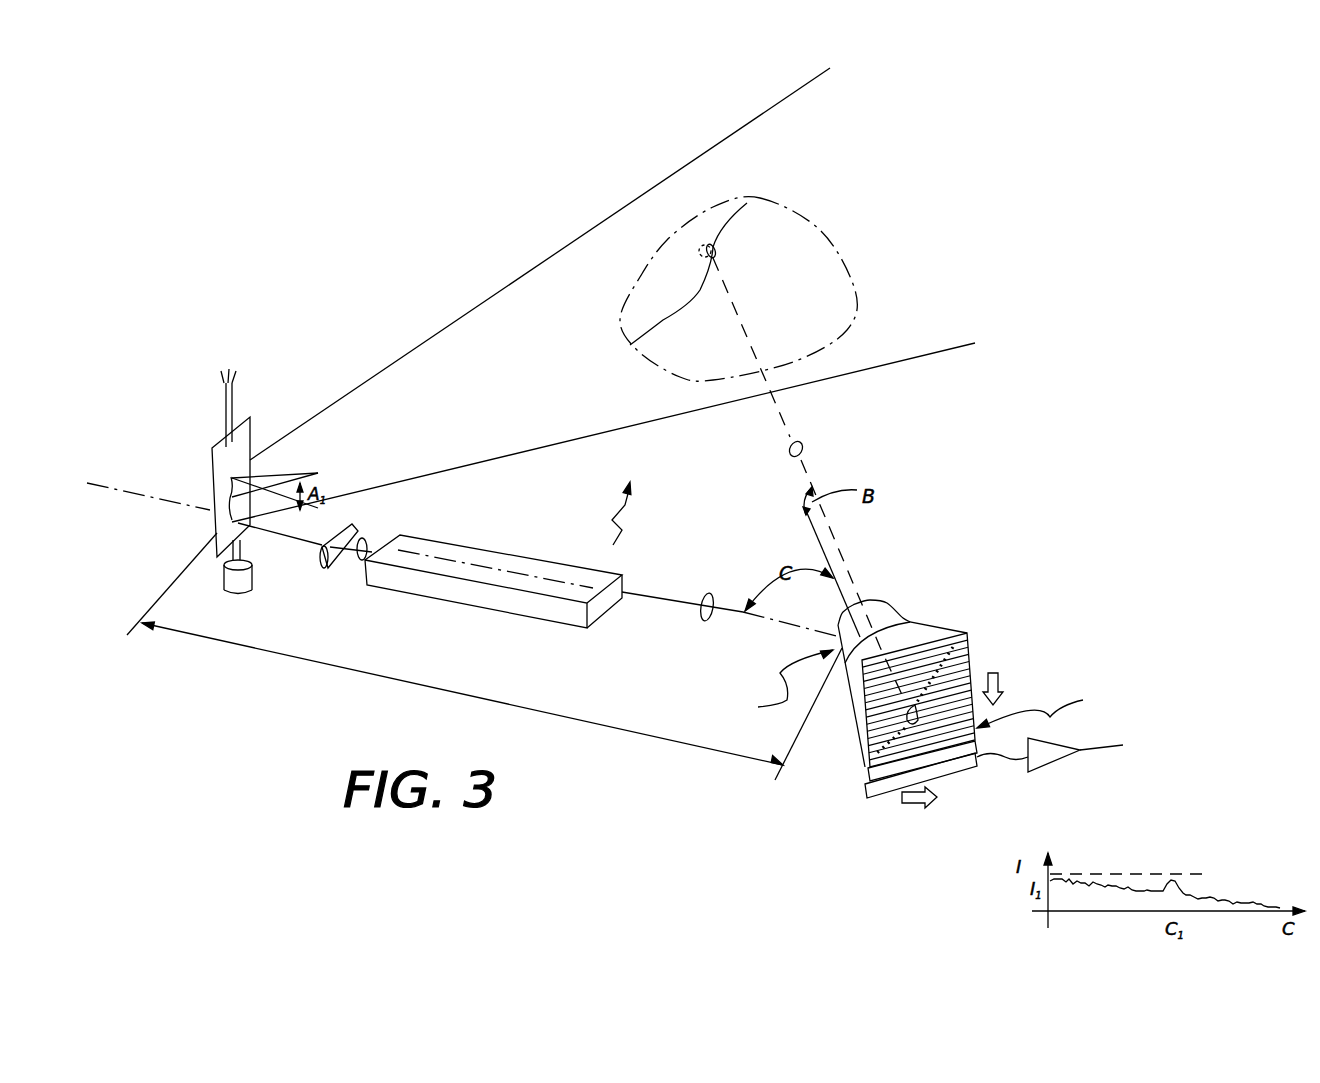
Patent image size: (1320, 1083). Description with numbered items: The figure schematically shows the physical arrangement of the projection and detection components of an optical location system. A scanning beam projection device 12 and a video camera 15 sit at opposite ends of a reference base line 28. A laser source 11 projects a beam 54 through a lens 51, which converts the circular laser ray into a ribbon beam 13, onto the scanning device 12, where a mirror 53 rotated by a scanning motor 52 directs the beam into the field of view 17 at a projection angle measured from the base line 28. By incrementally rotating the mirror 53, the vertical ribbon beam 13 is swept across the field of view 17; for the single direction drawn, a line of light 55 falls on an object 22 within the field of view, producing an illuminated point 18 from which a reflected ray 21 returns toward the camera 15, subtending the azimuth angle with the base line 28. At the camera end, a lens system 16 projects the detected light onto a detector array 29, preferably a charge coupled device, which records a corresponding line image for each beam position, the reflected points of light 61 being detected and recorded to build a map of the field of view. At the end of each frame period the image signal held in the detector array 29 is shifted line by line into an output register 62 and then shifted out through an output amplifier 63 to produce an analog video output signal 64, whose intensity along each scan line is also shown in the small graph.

The laser source 11 is at (498, 605).
The scanning beam projection device 12 is at (250, 461).
The ribbon beam 13 is at (490, 292).
The video camera 15 is at (789, 694).
The lens system 16 is at (887, 600).
The field of view 17 is at (618, 524).
The illuminated point 18 is at (717, 252).
The reflected ray 21 is at (810, 445).
The object 22 is at (738, 289).
The reference base line 28 is at (705, 622).
The detector array 29 is at (1047, 700).
The lens 51 is at (325, 565).
The scanning motor 52 is at (243, 590).
The mirror 53 is at (255, 432).
The beam 54 is at (367, 538).
The line of light 55 is at (660, 313).
The reflected points of light 61 is at (868, 772).
The output register 62 is at (880, 800).
The output amplifier 63 is at (1045, 767).
The analog video output signal 64 is at (1098, 750).